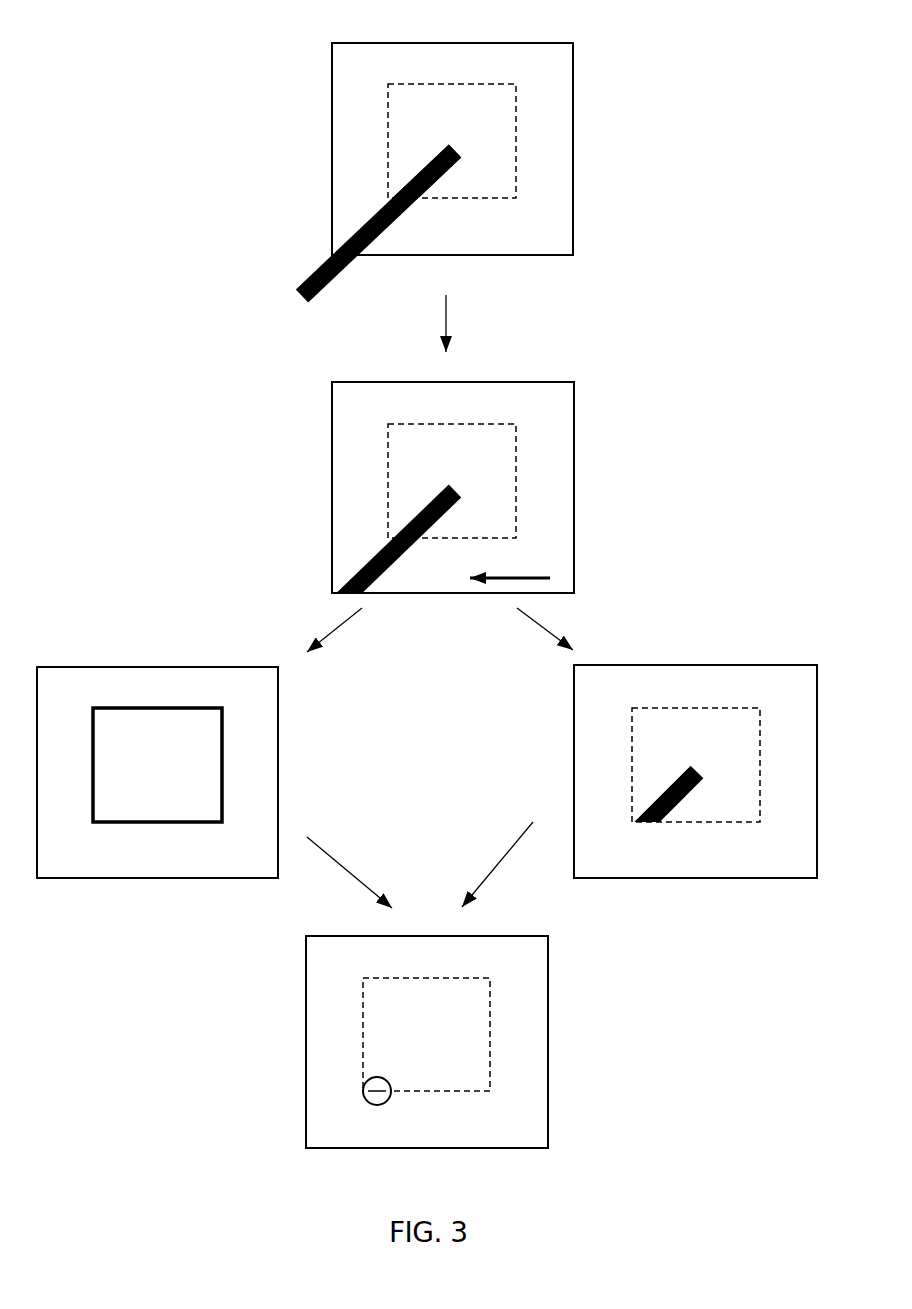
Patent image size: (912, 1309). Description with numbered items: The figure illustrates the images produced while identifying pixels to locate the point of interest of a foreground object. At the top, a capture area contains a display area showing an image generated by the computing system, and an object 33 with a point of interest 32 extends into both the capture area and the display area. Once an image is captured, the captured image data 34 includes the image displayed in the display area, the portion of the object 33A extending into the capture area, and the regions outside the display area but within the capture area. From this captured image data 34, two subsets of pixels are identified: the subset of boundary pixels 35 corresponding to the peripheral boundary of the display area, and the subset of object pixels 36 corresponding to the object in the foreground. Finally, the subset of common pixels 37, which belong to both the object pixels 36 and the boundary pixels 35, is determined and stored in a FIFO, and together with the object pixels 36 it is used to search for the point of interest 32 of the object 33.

The point of interest 32 is at (443, 140).
The object 33 is at (303, 268).
The portion of the object extending into the capture area 33A is at (373, 557).
The captured image data 34 is at (480, 469).
The subset of boundary pixels 35 is at (135, 705).
The subset of object pixels 36 is at (688, 762).
The subset of common pixels 37 is at (362, 1092).